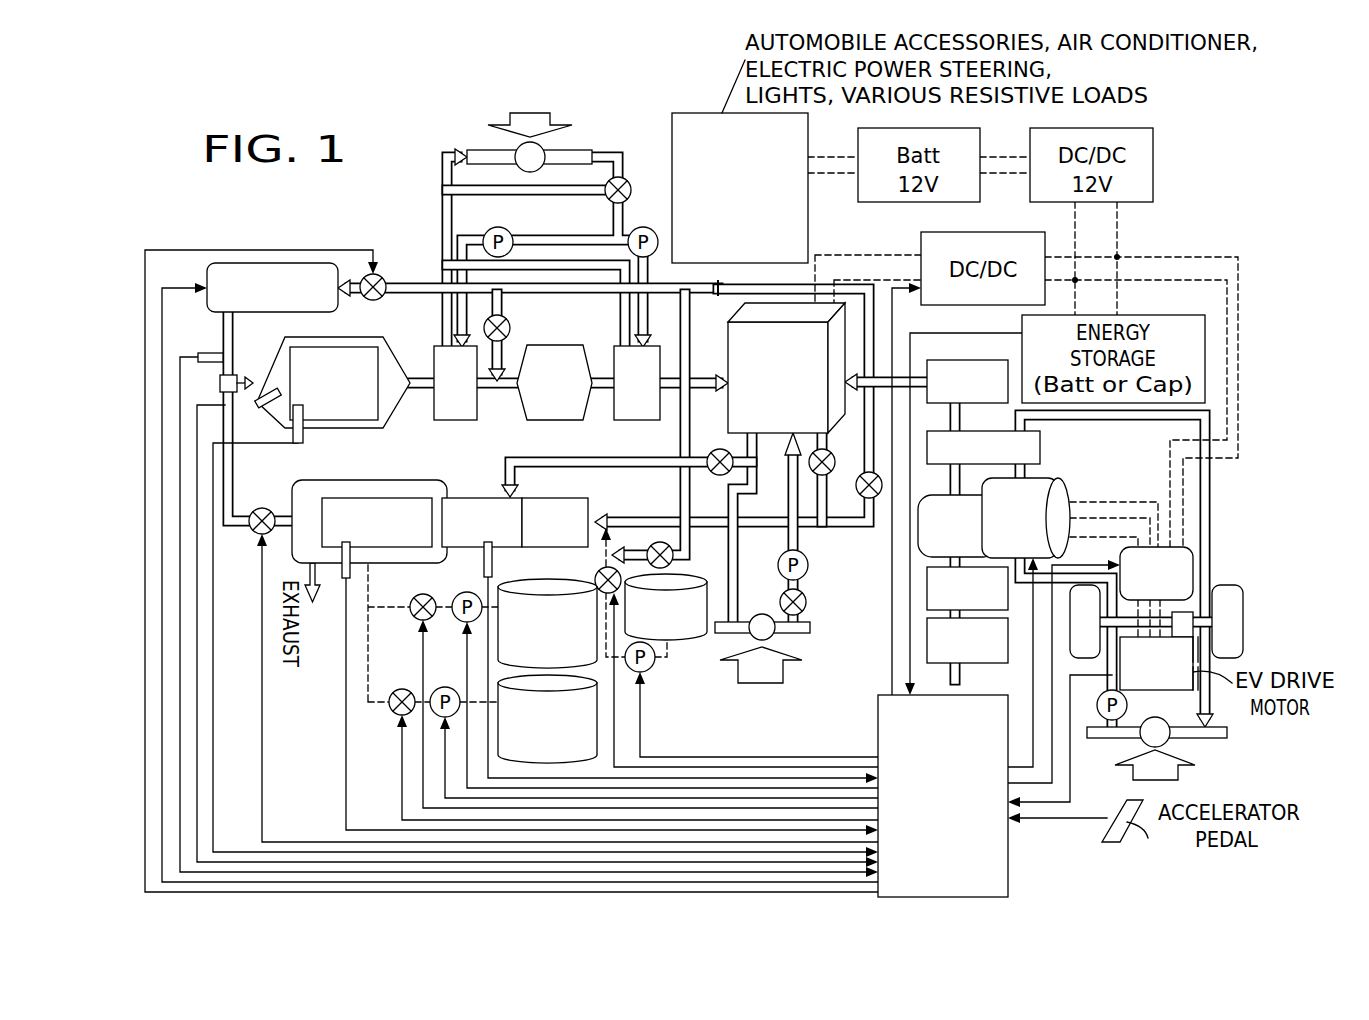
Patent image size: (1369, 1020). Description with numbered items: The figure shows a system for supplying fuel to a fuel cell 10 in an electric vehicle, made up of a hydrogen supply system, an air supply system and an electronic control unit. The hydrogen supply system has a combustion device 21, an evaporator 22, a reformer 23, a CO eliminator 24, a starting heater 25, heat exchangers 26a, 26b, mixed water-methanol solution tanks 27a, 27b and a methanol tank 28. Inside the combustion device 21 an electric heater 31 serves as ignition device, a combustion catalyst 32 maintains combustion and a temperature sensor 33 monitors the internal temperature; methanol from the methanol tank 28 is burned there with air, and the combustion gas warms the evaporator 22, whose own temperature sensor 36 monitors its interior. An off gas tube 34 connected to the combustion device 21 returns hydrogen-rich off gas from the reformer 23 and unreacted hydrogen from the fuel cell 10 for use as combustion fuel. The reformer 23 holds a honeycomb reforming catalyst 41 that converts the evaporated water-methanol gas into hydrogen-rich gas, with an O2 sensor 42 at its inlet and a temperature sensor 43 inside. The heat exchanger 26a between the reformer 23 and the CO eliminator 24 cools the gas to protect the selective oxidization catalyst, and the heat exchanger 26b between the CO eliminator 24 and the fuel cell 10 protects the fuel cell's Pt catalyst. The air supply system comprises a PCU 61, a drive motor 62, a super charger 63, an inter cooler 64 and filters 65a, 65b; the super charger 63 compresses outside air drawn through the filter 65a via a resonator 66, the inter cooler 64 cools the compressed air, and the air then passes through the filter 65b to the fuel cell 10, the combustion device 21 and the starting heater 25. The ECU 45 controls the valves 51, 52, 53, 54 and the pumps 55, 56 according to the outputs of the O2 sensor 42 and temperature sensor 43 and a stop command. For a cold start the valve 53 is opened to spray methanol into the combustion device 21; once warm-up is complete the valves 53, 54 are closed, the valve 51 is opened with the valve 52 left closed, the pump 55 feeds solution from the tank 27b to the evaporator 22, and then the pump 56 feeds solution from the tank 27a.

The fuel cell 10 is at (728, 352).
The combustion device 21 is at (475, 497).
The evaporator 22 is at (390, 480).
The reformer 23 is at (328, 432).
The CO eliminator 24 is at (553, 345).
The starting heater 25 is at (290, 262).
The heat exchanger 26a is at (434, 360).
The heat exchanger 26b is at (626, 421).
The mixed water-methanol solution tank 27a is at (514, 585).
The mixed water-methanol solution tank 27b is at (597, 726).
The methanol tank 28 is at (655, 660).
The electric heater 31 is at (556, 497).
The combustion catalyst 32 is at (584, 507).
The temperature sensor 33 is at (482, 556).
The off gas tube 34 is at (525, 458).
The temperature sensor 36 is at (343, 579).
The reforming catalyst 41 is at (322, 349).
The O2 sensor 42 is at (265, 389).
The temperature sensor 43 is at (293, 433).
The ECU 45 is at (1008, 862).
The valve 51 is at (391, 711).
The valve 52 is at (413, 617).
The valve 53 is at (620, 568).
The valve 54 is at (385, 275).
The pump 55 is at (435, 717).
The pump 56 is at (456, 622).
The PCU 61 is at (1193, 555).
The drive motor 62 is at (1070, 492).
The super charger 63 is at (918, 527).
The inter cooler 64 is at (1040, 448).
The filter 65a is at (927, 592).
The filter 65b is at (945, 360).
The resonator 66 is at (927, 648).